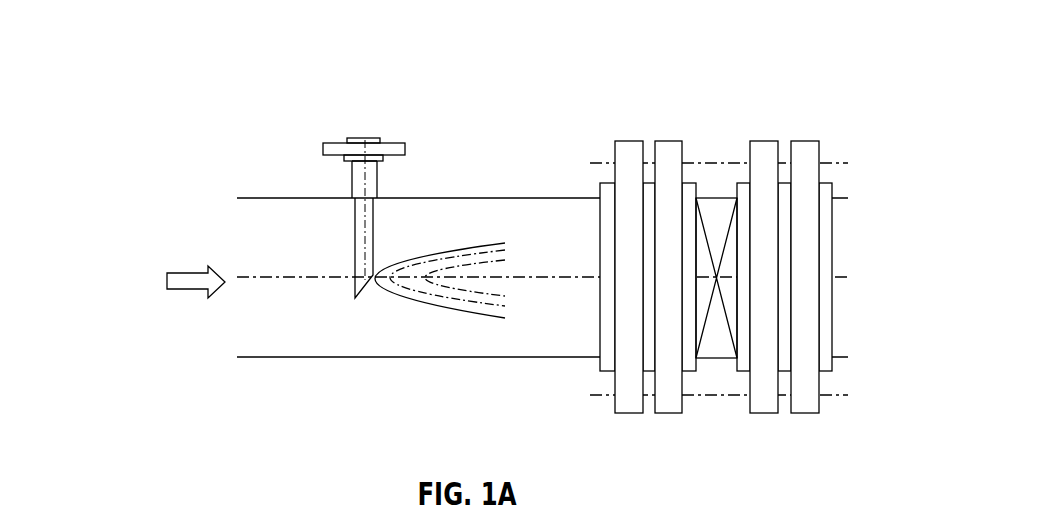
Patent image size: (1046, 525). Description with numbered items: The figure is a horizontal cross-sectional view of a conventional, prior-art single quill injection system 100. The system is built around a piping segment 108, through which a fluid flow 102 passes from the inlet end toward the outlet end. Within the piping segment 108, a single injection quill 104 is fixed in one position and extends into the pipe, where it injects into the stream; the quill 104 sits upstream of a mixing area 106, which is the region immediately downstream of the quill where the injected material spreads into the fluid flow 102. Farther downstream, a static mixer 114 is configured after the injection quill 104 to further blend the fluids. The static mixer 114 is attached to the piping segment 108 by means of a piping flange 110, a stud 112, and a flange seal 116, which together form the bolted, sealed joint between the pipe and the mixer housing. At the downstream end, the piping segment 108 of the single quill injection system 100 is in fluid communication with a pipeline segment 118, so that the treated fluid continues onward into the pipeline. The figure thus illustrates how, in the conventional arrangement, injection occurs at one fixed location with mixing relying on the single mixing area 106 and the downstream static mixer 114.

The conventional single quill injection system 100 is at (150, 44).
The fluid flow 102 is at (191, 273).
The single injection quill 104 is at (375, 135).
The mixing area 106 is at (442, 253).
The piping segment 108 is at (533, 197).
The piping flange 110 is at (627, 140).
The stud 112 is at (697, 165).
The static mixer 114 is at (708, 201).
The flange seal 116 is at (806, 141).
The pipeline segment 118 is at (840, 226).